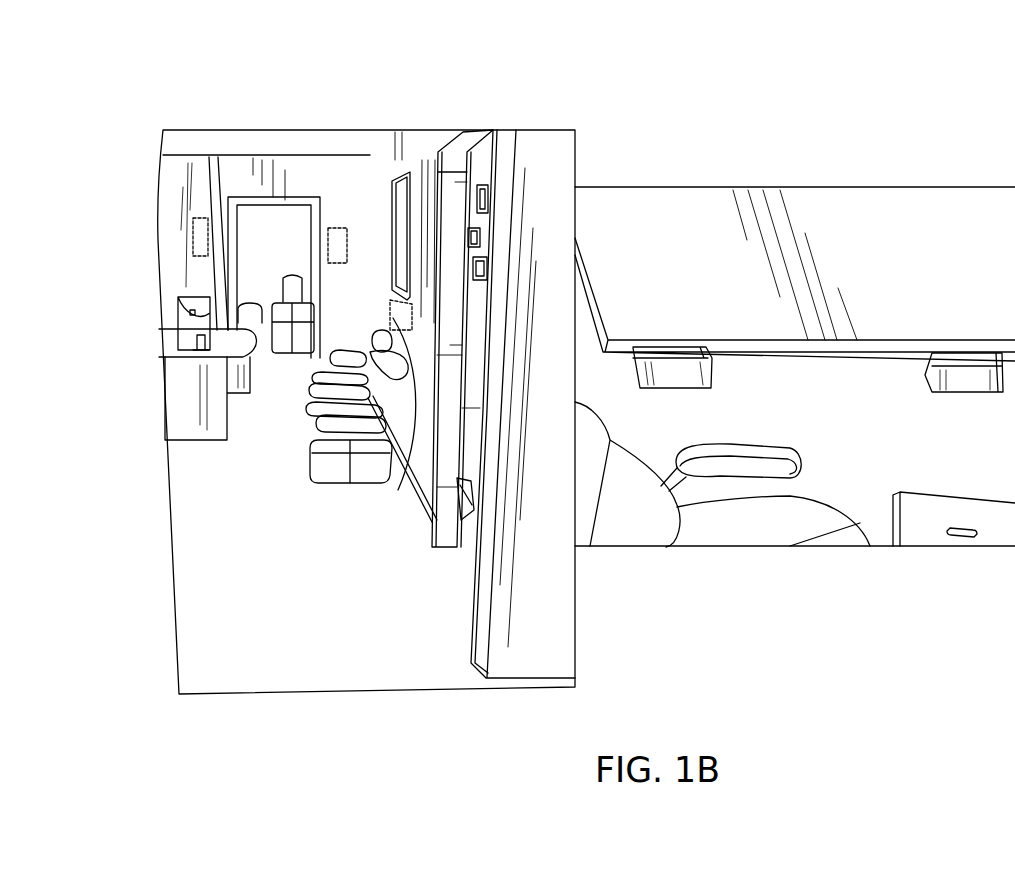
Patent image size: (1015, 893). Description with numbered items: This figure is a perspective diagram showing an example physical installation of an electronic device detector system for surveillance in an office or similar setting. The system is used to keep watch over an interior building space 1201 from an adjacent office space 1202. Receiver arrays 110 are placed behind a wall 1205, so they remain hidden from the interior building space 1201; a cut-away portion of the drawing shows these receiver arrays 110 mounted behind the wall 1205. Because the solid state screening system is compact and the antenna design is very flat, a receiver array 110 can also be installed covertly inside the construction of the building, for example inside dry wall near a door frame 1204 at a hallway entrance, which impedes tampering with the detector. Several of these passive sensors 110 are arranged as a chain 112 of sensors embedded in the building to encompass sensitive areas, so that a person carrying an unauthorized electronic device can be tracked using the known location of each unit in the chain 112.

The receiver array 110 is at (328, 246).
The chain of sensors 112 is at (192, 252).
The interior building space 1201 is at (416, 120).
The office space 1202 is at (482, 130).
The door frame 1204 is at (353, 204).
The wall 1205 is at (423, 212).